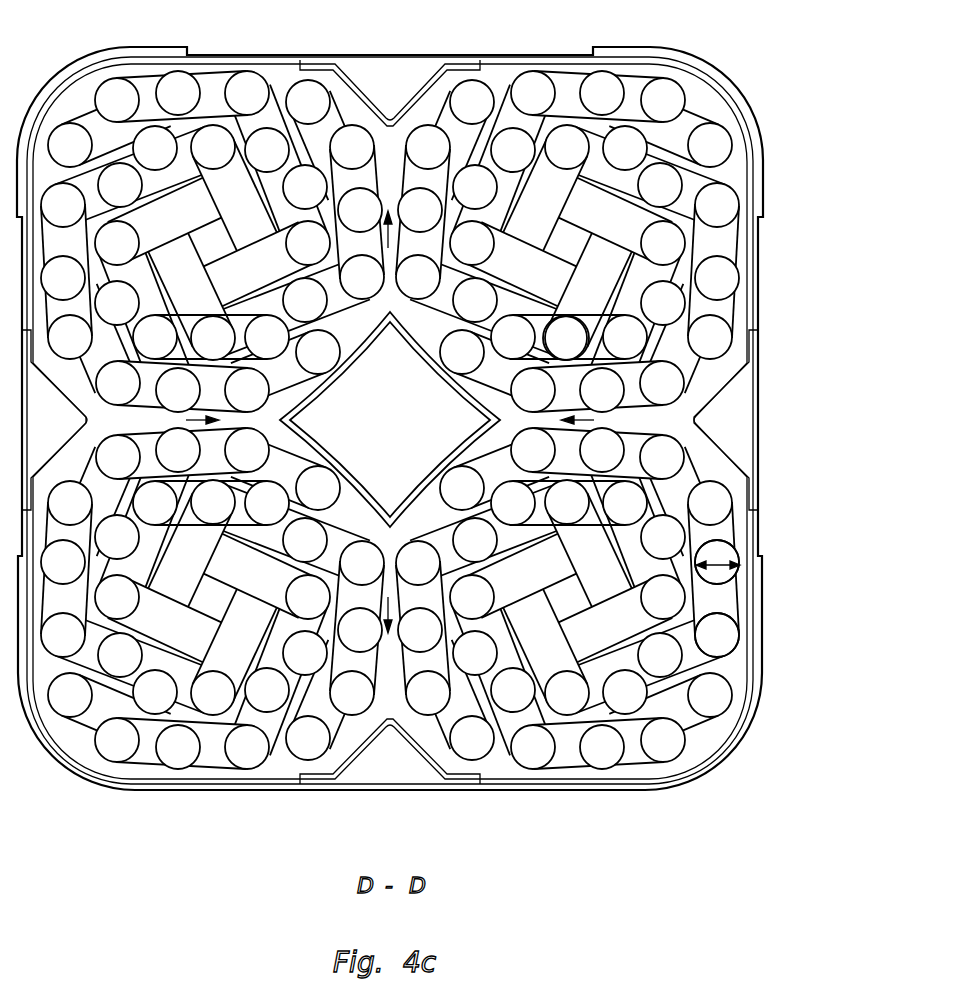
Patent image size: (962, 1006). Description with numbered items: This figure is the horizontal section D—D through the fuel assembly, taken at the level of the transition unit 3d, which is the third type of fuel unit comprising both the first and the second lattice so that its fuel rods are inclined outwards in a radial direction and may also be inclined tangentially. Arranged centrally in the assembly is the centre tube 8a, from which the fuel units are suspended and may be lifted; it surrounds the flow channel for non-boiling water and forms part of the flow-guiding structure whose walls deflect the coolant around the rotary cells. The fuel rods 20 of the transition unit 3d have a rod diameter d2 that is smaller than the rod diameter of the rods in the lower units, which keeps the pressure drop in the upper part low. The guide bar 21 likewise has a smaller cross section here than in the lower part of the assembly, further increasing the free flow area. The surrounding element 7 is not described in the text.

The channel box 7 is at (753, 233).
The transition unit 3d is at (429, 418).
The centre tube 8a is at (548, 342).
The rod diameter d2 is at (725, 560).
The fuel rods 20 is at (720, 633).
The guide bar 21 is at (368, 752).